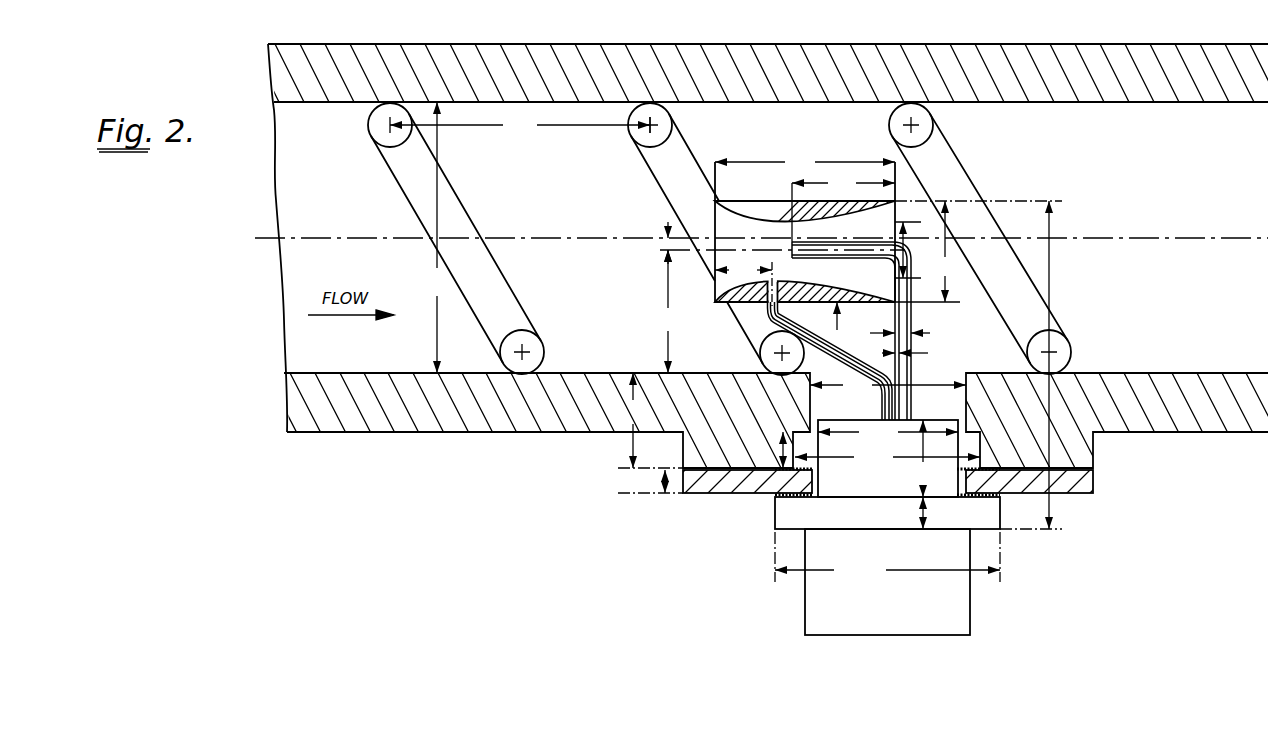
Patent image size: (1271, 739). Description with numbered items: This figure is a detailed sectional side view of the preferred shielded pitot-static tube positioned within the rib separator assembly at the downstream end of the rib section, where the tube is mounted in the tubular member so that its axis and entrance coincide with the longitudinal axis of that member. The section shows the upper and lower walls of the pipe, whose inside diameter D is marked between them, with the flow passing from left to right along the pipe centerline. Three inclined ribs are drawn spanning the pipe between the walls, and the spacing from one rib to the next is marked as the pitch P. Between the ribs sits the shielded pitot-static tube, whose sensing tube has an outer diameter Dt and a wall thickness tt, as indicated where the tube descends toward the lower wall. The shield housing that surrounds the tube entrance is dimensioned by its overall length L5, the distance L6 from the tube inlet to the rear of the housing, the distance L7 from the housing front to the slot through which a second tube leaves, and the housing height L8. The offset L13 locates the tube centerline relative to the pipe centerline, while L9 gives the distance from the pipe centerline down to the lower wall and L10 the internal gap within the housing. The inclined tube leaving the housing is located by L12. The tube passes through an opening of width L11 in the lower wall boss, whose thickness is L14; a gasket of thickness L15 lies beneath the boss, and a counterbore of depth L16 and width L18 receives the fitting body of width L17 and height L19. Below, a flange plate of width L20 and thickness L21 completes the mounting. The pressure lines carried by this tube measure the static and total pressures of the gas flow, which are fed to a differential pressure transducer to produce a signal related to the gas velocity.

The pitch between adjacent vanes P is at (520, 125).
The pipe inside diameter D is at (436, 237).
The pitot tube dimension L5 is at (805, 161).
The pitot tube dimension L6 is at (843, 182).
The pitot tube dimension L7 is at (743, 268).
The pitot tube dimension L8 is at (945, 251).
The pitot tube dimension L9 is at (669, 311).
The pitot tube dimension L10 is at (920, 250).
The pitot tube dimension L11 is at (888, 384).
The pitot tube dimension L12 is at (830, 361).
The pitot tube dimension L13 is at (644, 246).
The pitot tube dimension L14 is at (634, 420).
The pitot tube dimension L15 is at (646, 485).
The pitot tube dimension L16 is at (765, 450).
The pitot tube dimension L17 is at (888, 434).
The pitot tube dimension L18 is at (887, 459).
The pitot tube dimension L19 is at (923, 458).
The pitot tube dimension L20 is at (887, 572).
The pitot tube dimension L21 is at (942, 513).
The pitot tube diameter Dt is at (912, 334).
The pitot tube wall thickness tt is at (916, 356).